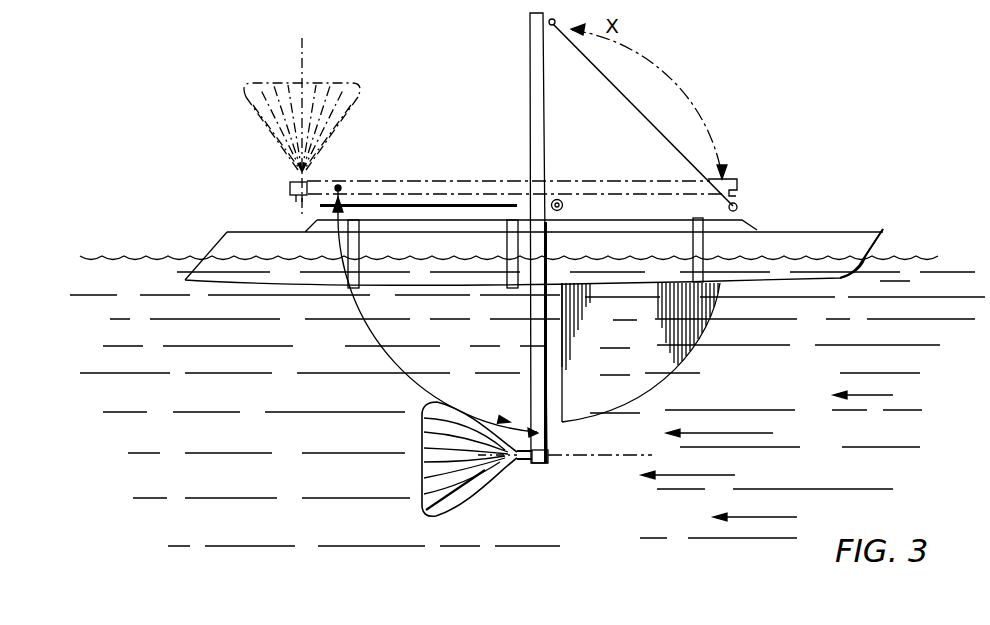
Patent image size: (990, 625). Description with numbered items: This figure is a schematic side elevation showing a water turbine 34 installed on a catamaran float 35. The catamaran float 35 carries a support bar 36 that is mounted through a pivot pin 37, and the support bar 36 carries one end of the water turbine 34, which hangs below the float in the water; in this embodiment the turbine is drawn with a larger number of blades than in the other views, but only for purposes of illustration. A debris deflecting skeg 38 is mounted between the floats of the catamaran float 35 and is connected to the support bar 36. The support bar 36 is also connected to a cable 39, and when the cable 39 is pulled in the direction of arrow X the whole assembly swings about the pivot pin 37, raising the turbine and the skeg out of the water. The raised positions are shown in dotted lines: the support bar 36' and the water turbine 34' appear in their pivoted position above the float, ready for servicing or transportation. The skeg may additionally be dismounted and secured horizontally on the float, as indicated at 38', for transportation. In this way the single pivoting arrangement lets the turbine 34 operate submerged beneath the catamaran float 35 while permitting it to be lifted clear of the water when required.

The water turbine 34 is at (537, 462).
The water turbine in raised position 34' is at (266, 126).
The catamaran float 35 is at (863, 241).
The support bar 36 is at (505, 238).
The support bar in raised position 36' is at (782, 170).
The pivot pin 37 is at (560, 200).
The debris deflecting skeg 38 is at (673, 352).
The skeg secured horizontally 38' is at (337, 223).
The cable 39 is at (631, 101).